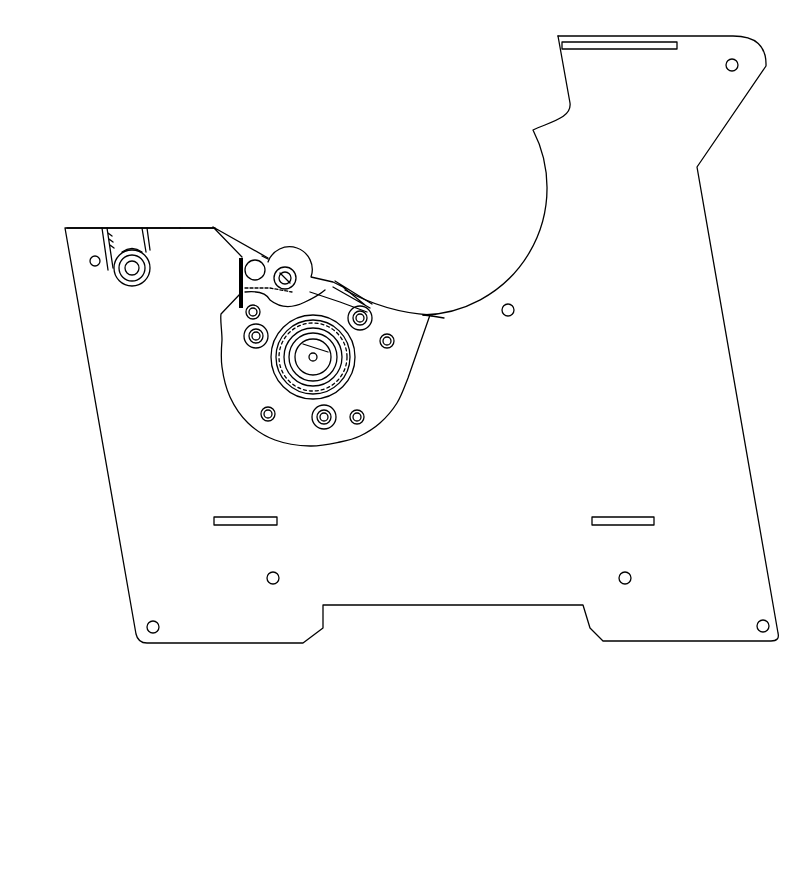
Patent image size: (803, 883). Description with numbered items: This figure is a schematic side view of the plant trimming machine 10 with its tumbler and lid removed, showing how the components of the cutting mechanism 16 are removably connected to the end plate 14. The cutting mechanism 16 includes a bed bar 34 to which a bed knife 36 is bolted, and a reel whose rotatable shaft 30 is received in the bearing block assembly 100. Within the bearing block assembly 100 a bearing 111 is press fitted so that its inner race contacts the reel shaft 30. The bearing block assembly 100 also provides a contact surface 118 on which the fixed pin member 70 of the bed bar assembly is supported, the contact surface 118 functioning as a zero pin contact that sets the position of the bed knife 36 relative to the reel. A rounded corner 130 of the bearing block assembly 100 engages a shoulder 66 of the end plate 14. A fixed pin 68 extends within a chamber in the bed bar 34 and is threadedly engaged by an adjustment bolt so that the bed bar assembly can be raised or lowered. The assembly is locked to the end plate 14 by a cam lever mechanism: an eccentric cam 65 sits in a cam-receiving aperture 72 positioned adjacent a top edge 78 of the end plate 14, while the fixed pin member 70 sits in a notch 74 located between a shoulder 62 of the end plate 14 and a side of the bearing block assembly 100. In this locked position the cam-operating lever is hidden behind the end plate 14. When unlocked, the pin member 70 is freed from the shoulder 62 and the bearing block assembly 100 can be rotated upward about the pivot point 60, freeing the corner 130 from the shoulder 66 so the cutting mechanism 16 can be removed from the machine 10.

The plant trimming machine 10 is at (426, 124).
The end plate 14 is at (188, 577).
The cutting mechanism 16 is at (200, 194).
The rotatable shaft 30 is at (312, 358).
The bed bar 34 is at (80, 214).
The bed knife 36 is at (258, 252).
The pivot point 60 is at (433, 328).
The shoulder 62 is at (234, 256).
The eccentric cam 65 is at (120, 270).
The shoulder 66 is at (440, 318).
The fixed pin 68 is at (136, 270).
The fixed pin member 70 is at (250, 261).
The cam-receiving aperture 72 is at (133, 248).
The notch 74 is at (272, 259).
The top edge 78 is at (80, 241).
The bearing block assembly 100 is at (290, 458).
The bearing 111 is at (343, 358).
The contact surface 118 is at (247, 283).
The rounded corner 130 is at (418, 320).